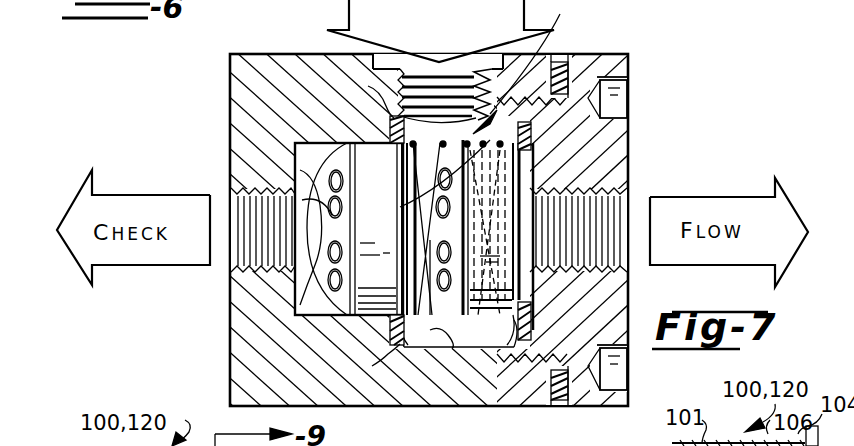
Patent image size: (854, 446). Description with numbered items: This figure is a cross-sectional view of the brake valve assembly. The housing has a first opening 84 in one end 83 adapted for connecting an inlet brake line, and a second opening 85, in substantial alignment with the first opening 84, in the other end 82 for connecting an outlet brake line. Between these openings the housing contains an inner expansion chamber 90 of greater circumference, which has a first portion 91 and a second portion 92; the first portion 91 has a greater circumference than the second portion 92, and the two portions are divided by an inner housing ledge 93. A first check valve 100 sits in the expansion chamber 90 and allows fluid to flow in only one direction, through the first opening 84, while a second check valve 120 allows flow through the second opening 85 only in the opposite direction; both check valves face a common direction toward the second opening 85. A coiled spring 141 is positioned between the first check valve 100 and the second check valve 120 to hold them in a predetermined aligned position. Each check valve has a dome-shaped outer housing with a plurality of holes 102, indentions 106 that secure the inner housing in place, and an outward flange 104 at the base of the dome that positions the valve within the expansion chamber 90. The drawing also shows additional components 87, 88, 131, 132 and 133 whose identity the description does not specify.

The end of the housing 82 is at (232, 112).
The end of the housing 83 is at (600, 150).
The first opening 84 is at (604, 212).
The second opening 85 is at (244, 252).
The upper set screw plug 87 is at (627, 94).
The lower set screw plug 88 is at (627, 378).
The inner expansion chamber 90 is at (528, 67).
The first portion of the expansion chamber 91 is at (442, 342).
The second portion of the expansion chamber 92 is at (313, 291).
The inner housing ledge 93 is at (392, 131).
The first check valve 100 is at (440, 73).
The holes 102 is at (324, 180).
The outward flange 104 is at (411, 258).
The indentions 106 is at (384, 190).
The second check valve 120 is at (363, 150).
The retaining pin 131 is at (571, 62).
The seal ring 132 is at (534, 142).
The seal groove 133 is at (364, 226).
The coiled spring 141 is at (493, 336).